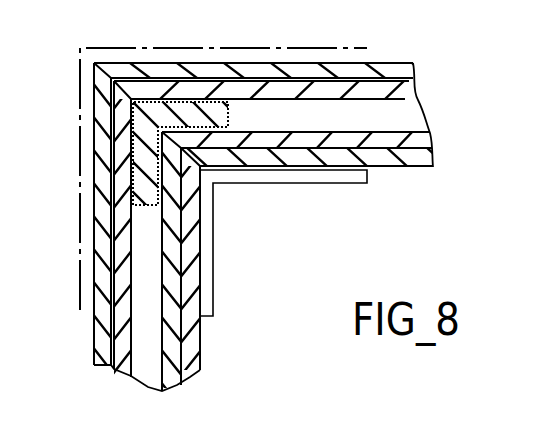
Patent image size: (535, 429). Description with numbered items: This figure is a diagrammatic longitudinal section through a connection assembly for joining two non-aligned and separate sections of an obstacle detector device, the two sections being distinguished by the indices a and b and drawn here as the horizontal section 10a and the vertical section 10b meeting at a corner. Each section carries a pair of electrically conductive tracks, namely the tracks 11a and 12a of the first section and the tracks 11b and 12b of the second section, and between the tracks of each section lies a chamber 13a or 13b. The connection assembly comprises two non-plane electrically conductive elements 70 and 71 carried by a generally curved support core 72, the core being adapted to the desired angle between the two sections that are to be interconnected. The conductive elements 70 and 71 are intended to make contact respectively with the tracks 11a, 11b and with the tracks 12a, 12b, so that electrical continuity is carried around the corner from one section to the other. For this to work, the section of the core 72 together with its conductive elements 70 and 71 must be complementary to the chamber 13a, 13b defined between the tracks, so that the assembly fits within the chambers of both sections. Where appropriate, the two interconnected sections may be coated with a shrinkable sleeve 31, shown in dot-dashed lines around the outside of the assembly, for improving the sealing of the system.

The shrinkable sleeve 31 is at (368, 58).
The first laminate panel 10a is at (298, 106).
The second laminate panel 10b is at (214, 246).
The electrically conductive track 11a is at (403, 88).
The electrically conductive track 11b is at (122, 378).
The electrically conductive track 12a is at (420, 141).
The electrically conductive track 12b is at (177, 382).
The chamber 13a is at (405, 117).
The chamber 13b is at (150, 380).
The electrically conductive element 70 is at (186, 155).
The electrically conductive element 71 is at (163, 176).
The support core 72 is at (222, 110).